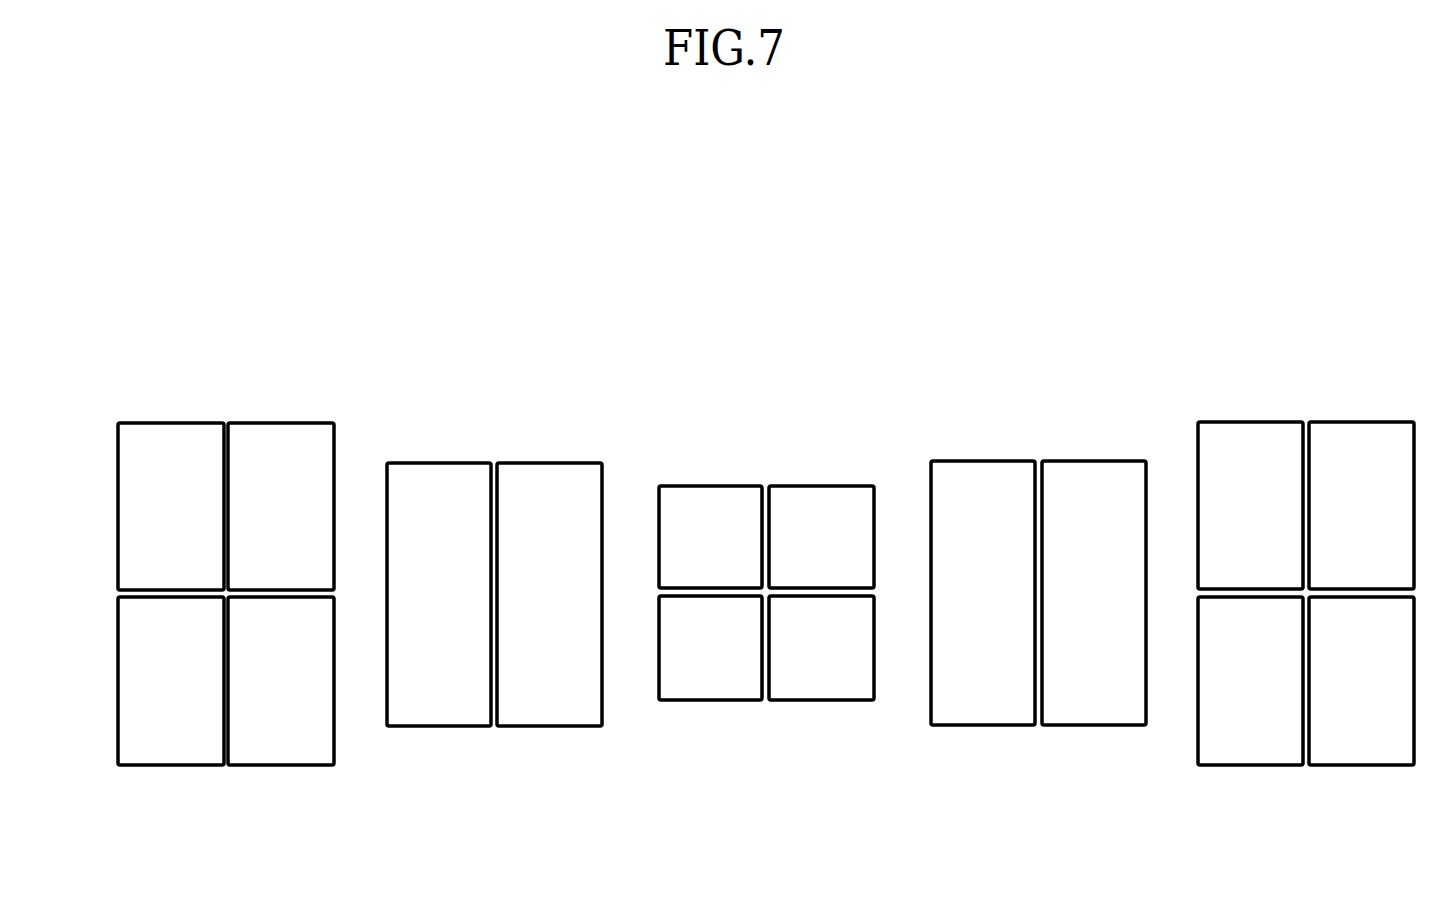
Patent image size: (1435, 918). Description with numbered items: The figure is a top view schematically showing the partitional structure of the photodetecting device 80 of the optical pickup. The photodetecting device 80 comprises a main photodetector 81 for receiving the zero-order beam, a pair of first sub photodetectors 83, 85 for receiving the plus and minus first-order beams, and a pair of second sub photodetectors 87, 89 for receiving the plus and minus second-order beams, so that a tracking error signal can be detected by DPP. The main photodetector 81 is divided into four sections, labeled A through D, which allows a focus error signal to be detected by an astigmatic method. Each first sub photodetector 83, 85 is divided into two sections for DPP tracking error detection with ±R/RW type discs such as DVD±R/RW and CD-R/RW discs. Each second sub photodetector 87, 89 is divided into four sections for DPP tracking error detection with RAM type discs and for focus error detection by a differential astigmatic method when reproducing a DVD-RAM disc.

The photodetecting device 80 is at (557, 378).
The main photodetector 81 is at (711, 700).
The first sub photodetector 83 is at (438, 726).
The first sub photodetector 85 is at (983, 725).
The second sub photodetector 87 is at (170, 766).
The second sub photodetector 89 is at (1251, 765).